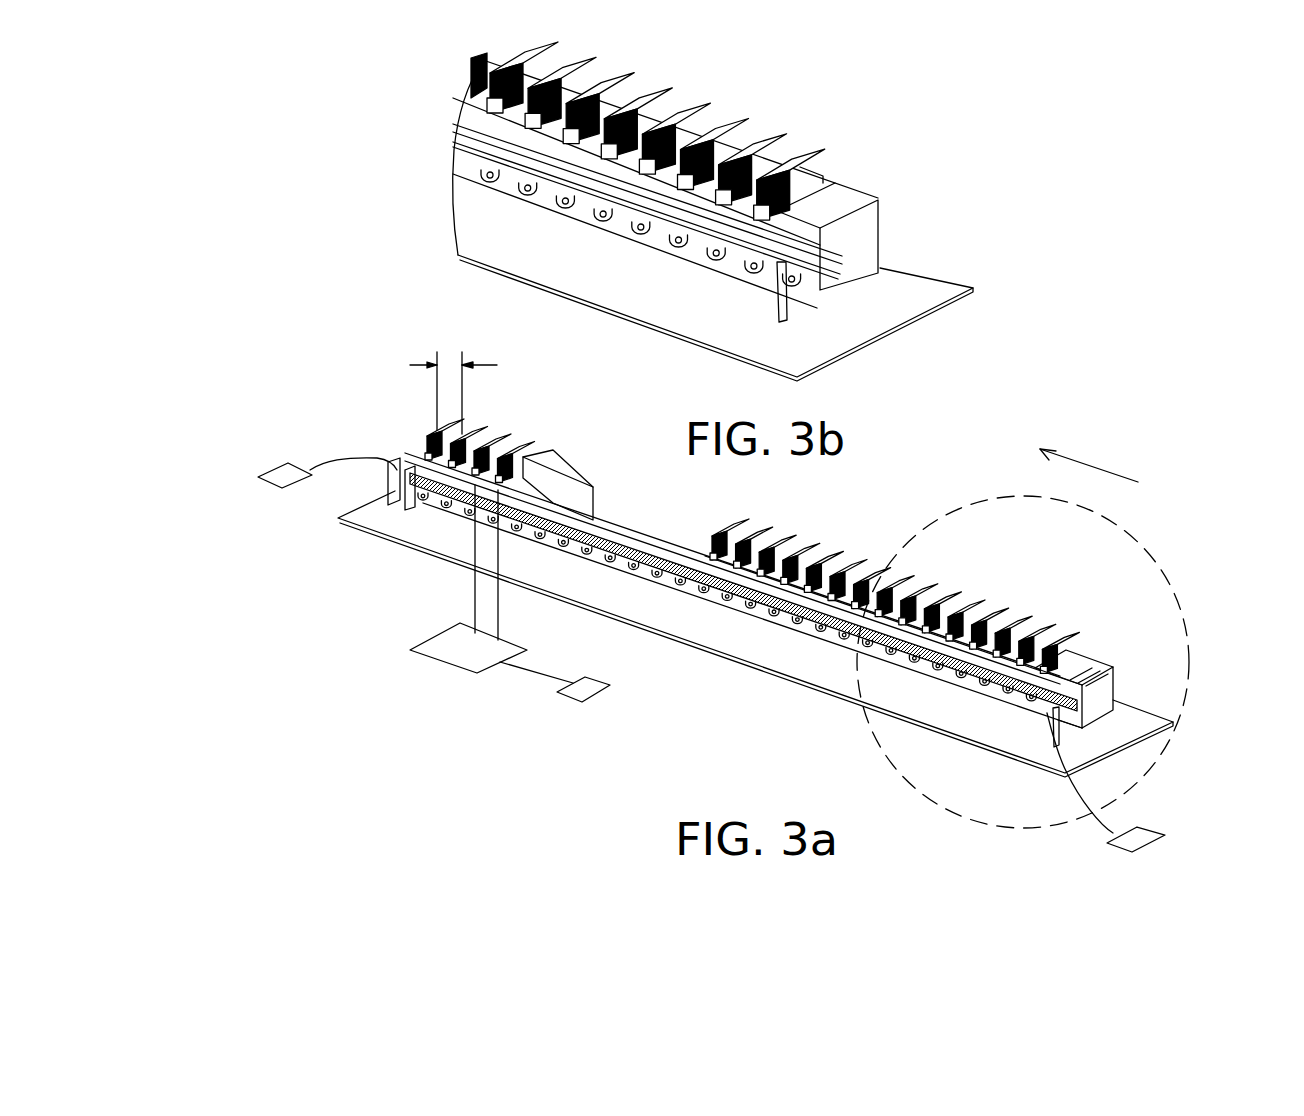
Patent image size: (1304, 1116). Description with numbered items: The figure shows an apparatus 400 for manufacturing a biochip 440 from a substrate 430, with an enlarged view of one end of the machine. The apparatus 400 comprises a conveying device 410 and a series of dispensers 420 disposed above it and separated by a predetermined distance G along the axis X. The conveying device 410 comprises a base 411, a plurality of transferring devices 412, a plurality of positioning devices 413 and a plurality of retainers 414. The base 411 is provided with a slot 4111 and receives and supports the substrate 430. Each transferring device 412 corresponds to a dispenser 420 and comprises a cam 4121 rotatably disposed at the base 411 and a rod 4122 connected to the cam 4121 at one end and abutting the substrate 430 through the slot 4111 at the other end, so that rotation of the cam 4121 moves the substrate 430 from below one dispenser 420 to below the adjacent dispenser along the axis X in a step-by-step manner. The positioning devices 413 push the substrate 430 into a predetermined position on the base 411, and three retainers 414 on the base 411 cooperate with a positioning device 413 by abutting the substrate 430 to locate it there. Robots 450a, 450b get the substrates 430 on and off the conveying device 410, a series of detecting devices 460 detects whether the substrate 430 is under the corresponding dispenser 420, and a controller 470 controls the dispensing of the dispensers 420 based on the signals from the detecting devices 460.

In FIG. 3A, the apparatus 400 is at (270, 391).
In FIG. 3A, the conveying device 410 is at (1068, 730).
In FIG. 3A, the base 411 is at (1070, 692).
In FIG. 3A, the transferring devices 412 is at (750, 629).
In FIG. 3B, the positioning devices 413 is at (781, 268).
In FIG. 3B, the retainers 414 is at (600, 188).
In FIG. 3A, the dispensers 420 is at (1052, 656).
In FIG. 3A, the substrate 430 is at (1113, 667).
In FIG. 3A, the biochip 440 is at (413, 463).
In FIG. 3A, the robot 450a is at (1147, 842).
In FIG. 3A, the robot 450b is at (277, 472).
In FIG. 3A, the detecting devices 460 is at (592, 690).
In FIG. 3A, the controller 470 is at (447, 638).
In FIG. 3B, the slot 4111 is at (842, 262).
In FIG. 3B, the cam 4121 is at (640, 233).
In FIG. 3B, the rod 4122 is at (637, 229).